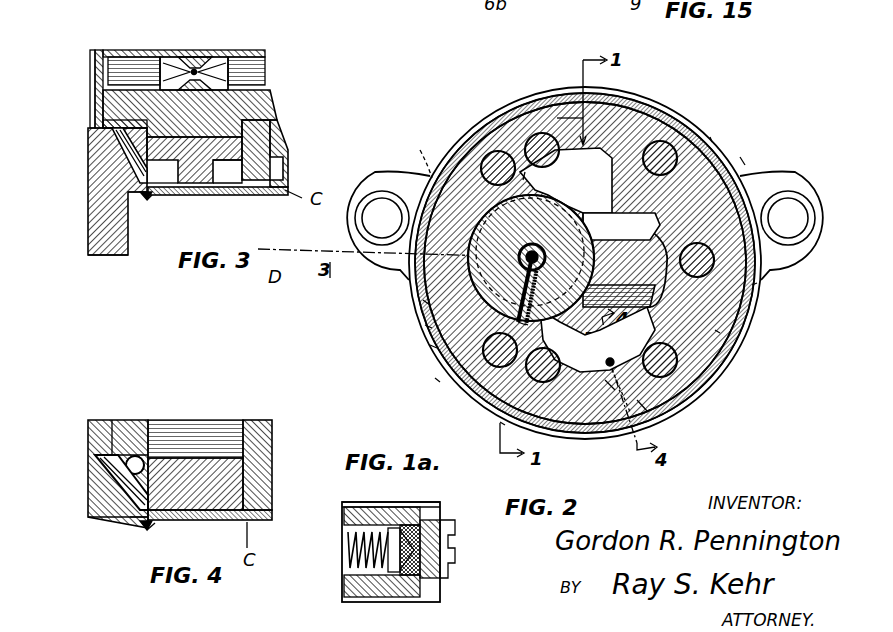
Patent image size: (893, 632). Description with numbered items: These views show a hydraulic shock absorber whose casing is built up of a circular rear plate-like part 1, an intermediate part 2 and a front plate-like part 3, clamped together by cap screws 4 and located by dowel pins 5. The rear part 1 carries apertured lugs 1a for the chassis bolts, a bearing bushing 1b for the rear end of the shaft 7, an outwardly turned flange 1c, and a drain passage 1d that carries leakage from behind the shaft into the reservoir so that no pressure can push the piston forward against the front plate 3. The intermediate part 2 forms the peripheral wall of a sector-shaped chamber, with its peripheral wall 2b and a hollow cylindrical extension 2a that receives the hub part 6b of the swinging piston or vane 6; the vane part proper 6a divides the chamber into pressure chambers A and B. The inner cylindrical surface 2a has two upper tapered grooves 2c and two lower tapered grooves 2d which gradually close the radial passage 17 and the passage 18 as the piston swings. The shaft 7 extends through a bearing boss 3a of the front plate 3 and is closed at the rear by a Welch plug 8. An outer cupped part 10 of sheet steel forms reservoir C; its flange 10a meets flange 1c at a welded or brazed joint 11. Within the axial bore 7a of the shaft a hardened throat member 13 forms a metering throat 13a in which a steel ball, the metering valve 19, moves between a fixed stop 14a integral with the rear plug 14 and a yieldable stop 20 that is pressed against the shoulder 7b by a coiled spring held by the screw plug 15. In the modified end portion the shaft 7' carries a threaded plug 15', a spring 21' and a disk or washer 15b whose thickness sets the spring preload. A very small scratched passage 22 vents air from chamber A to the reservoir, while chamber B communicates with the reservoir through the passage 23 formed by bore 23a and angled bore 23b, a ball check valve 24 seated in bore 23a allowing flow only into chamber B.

In FIG. 3, the rear plate-like part 1 is at (95, 180).
In FIG. 4, the rear plate-like part 1 is at (95, 518).
In FIG. 2, the rear plate-like part 1 is at (408, 280).
In FIG. 3, the apertured lugs 1a is at (105, 258).
In FIG. 2, the apertured lugs 1a is at (380, 172).
In FIG. 3, the bearing bushing 1b is at (103, 122).
In FIG. 2, the bearing bushing 1b is at (430, 345).
In FIG. 3, the outwardly turned flange 1c is at (120, 215).
In FIG. 4, the outwardly turned flange 1c is at (140, 525).
In FIG. 3, the passage 1d is at (128, 150).
In FIG. 2, the passage 1d is at (423, 300).
In FIG. 3, the intermediate part 2 is at (187, 186).
In FIG. 4, the intermediate part 2 is at (210, 502).
In FIG. 2, the intermediate part 2 is at (723, 160).
In FIG. 3, the hollow cylindrical extension 2a is at (172, 185).
In FIG. 2, the hollow cylindrical extension 2a is at (435, 378).
In FIG. 4, the peripheral wall 2b is at (212, 458).
In FIG. 2, the peripheral wall 2b is at (715, 330).
In FIG. 2, the tapered grooves 2c is at (525, 172).
In FIG. 2, the tapered grooves 2d is at (500, 422).
In FIG. 3, the front plate-like part 3 is at (283, 160).
In FIG. 4, the front plate-like part 3 is at (273, 475).
In FIG. 3, the bearing boss 3a is at (275, 147).
In FIG. 2, the cap screws 4 is at (540, 133).
In FIG. 2, the dowel pins 5 is at (487, 150).
In FIG. 2, the swinging piston or vane 6 is at (600, 212).
In FIG. 2, the vane part proper 6a is at (622, 214).
In FIG. 3, the hub part 6b is at (225, 184).
In FIG. 2, the hub part 6b is at (588, 211).
In FIG. 3, the shaft 7 is at (181, 93).
In FIG. 2, the shaft 7 is at (423, 154).
In FIG. 1a, the shaft 7' is at (389, 538).
In FIG. 3, the axial bore 7a is at (215, 62).
In FIG. 2, the axial bore 7a is at (425, 325).
In FIG. 3, the shoulder 7b is at (262, 82).
In FIG. 3, the Welch plug 8 is at (95, 75).
In FIG. 3, the outer cupped part 10 is at (278, 195).
In FIG. 4, the outer cupped part 10 is at (260, 521).
In FIG. 2, the outer cupped part 10 is at (507, 108).
In FIG. 3, the outwardly turned flange 10a is at (149, 203).
In FIG. 4, the outwardly turned flange 10a is at (152, 524).
In FIG. 2, the outwardly turned flange 10a is at (710, 137).
In FIG. 3, the welded or brazed joint 11 is at (147, 205).
In FIG. 4, the welded or brazed joint 11 is at (147, 532).
In FIG. 2, the welded or brazed joint 11 is at (740, 157).
In FIG. 2, the throat member 13 is at (519, 253).
In FIG. 3, the metering throat 13a is at (190, 55).
In FIG. 3, the plug 14 is at (120, 62).
In FIG. 3, the fixed stop 14a is at (165, 55).
In FIG. 3, the screw plug 15 is at (216, 45).
In FIG. 1a, the threaded plug 15' is at (455, 536).
In FIG. 1a, the disk or washer 15b is at (398, 545).
In FIG. 2, the radial passage 17 is at (546, 247).
In FIG. 2, the passage 18 is at (545, 322).
In FIG. 3, the metering valve 19 is at (193, 80).
In FIG. 3, the yieldable stop 20 is at (216, 80).
In FIG. 2, the yieldable stop 20 is at (541, 300).
In FIG. 1a, the spring 21' is at (346, 570).
In FIG. 2, the passage 22 is at (630, 95).
In FIG. 4, the passage 23 is at (88, 455).
In FIG. 2, the passage 23 is at (628, 420).
In FIG. 4, the bore 23a is at (110, 420).
In FIG. 2, the bore 23a is at (618, 380).
In FIG. 4, the bore 23b is at (95, 475).
In FIG. 2, the bore 23b is at (648, 412).
In FIG. 4, the ball check valve 24 is at (140, 455).
In FIG. 2, the ball check valve 24 is at (606, 361).